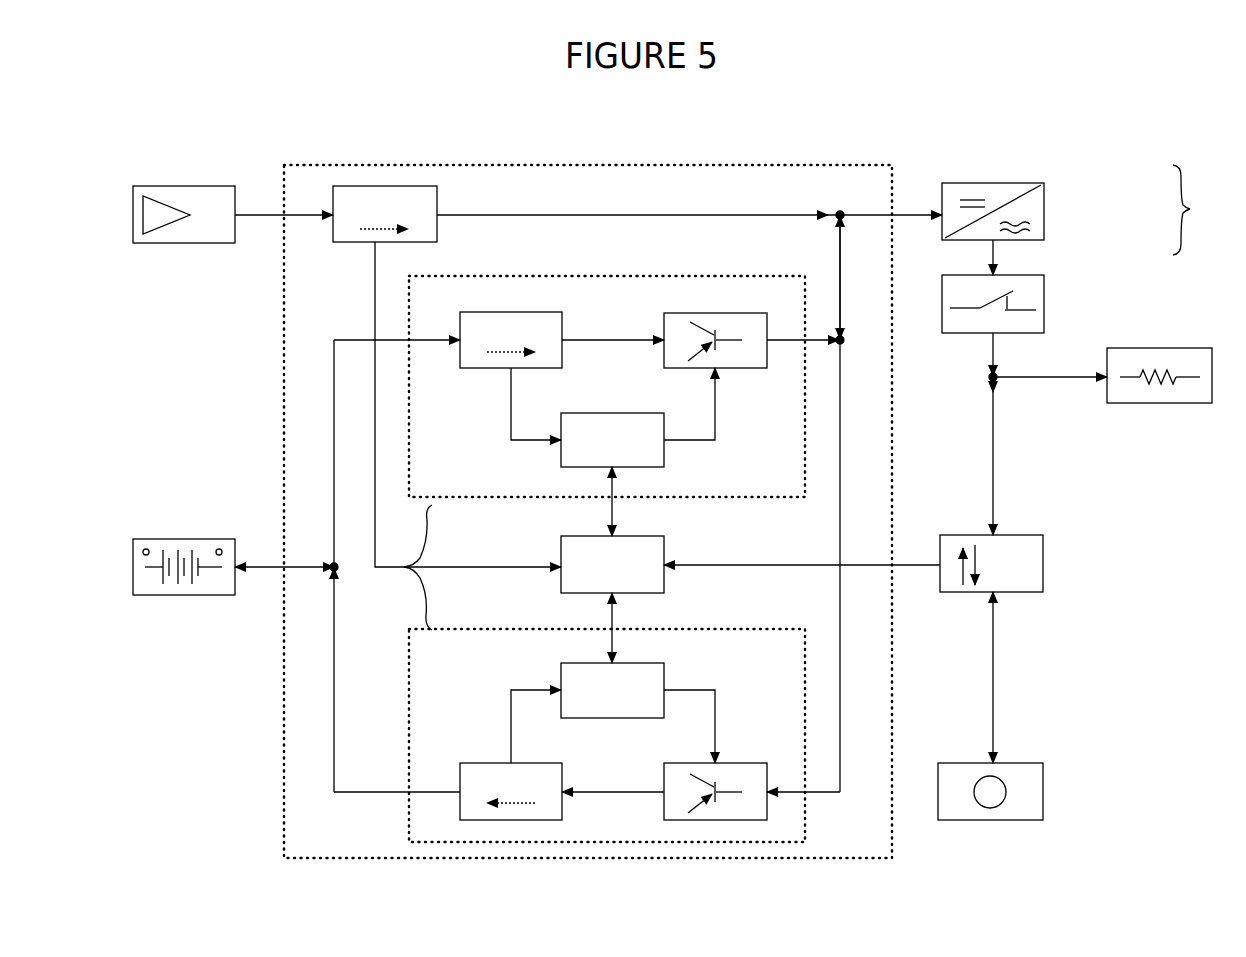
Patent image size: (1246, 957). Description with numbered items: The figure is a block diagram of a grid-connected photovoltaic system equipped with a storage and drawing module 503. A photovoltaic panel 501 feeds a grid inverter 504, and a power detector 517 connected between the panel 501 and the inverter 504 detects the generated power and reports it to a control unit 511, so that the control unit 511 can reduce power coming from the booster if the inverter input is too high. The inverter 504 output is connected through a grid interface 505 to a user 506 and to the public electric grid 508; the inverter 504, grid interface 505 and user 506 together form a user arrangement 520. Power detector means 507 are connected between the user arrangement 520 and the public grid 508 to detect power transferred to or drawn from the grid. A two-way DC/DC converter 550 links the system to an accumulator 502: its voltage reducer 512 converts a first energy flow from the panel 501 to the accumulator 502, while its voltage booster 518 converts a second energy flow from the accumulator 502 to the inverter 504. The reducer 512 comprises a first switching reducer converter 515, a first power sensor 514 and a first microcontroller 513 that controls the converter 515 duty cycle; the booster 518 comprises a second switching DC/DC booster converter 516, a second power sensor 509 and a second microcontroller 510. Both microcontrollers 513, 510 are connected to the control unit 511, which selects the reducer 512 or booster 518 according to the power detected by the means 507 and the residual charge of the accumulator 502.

The photovoltaic panel 501 is at (183, 186).
The accumulator 502 is at (183, 540).
The module 503 is at (612, 165).
The grid inverter 504 is at (992, 183).
The grid interface 505 is at (1048, 312).
The user 506 is at (1140, 346).
The power detector means 507 is at (1043, 537).
The public electric grid 508 is at (1043, 765).
The second power sensor 509 is at (460, 316).
The second microcontroller 510 is at (561, 416).
The control unit 511 is at (561, 538).
The voltage reducer 512 is at (481, 629).
The first microcontroller 513 is at (561, 665).
The first power sensor 514 is at (460, 766).
The first switching reducer converter 515 is at (664, 766).
The second switching DC/DC booster converter 516 is at (664, 316).
The power detector 517 is at (333, 243).
The voltage booster 518 is at (805, 276).
The user arrangement 520 is at (1200, 210).
The two-way DC/DC converter 550 is at (408, 567).